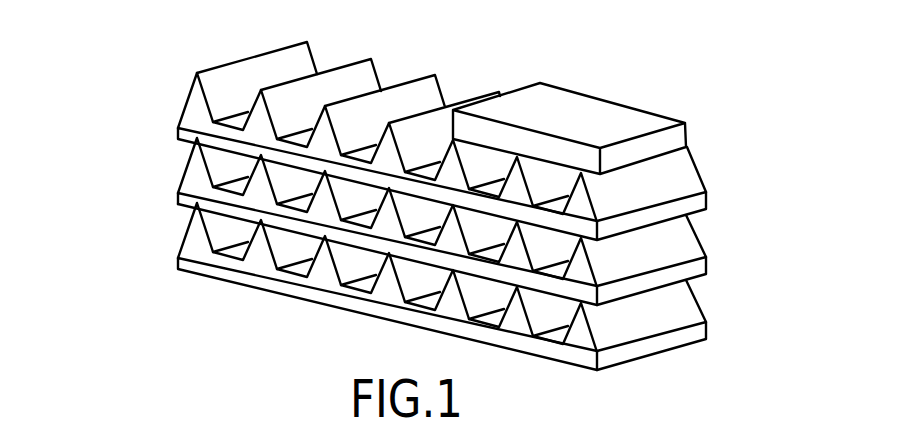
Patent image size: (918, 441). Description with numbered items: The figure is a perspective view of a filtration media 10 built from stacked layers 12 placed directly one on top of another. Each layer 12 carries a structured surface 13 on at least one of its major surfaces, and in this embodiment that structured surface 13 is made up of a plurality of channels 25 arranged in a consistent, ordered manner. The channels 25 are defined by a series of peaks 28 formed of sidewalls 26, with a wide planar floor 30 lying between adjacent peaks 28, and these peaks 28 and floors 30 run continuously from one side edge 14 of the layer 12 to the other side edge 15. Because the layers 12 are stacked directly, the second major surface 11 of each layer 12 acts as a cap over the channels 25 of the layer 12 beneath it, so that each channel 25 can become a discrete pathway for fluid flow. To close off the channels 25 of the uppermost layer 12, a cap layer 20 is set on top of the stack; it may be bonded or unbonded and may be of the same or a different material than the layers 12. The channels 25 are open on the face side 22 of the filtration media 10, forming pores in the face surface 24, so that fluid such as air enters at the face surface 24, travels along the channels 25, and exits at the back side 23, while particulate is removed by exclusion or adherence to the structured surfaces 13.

The filtration media 10 is at (708, 78).
The second major surface 11 is at (550, 295).
The stacked layers 12 is at (185, 175).
The structured surface 13 is at (187, 95).
The side edge 14 is at (177, 248).
The side edge 15 is at (619, 356).
The cap layer 20 is at (603, 107).
The face side 22 is at (509, 350).
The back side 23 is at (696, 299).
The face surface 24 is at (323, 272).
The channels 25 is at (333, 57).
The sidewalls 26 is at (219, 251).
The peaks 28 is at (442, 103).
The planar floor 30 is at (337, 286).